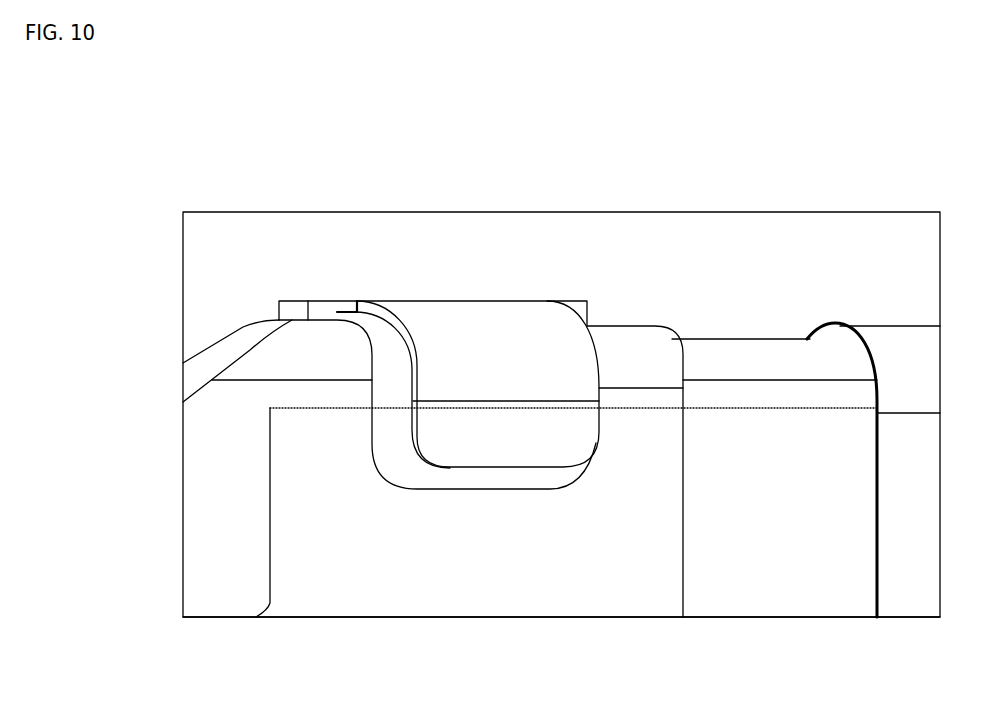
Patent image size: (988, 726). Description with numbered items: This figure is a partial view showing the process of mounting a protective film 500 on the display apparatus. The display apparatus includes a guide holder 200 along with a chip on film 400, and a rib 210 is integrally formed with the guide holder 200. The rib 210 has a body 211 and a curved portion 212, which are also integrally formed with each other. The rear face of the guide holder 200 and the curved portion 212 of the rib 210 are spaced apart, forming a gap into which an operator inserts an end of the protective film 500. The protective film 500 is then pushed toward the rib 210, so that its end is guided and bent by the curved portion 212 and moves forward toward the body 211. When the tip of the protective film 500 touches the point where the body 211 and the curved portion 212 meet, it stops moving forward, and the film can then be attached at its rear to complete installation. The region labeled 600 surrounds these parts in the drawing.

The guide holder 200 is at (215, 470).
The rib 210 is at (481, 354).
The body 211 is at (323, 307).
The curved portion 212 is at (481, 317).
The chip on film 400 is at (898, 342).
The protective film 500 is at (500, 585).
The interlayer insulating layer 600 is at (215, 266).